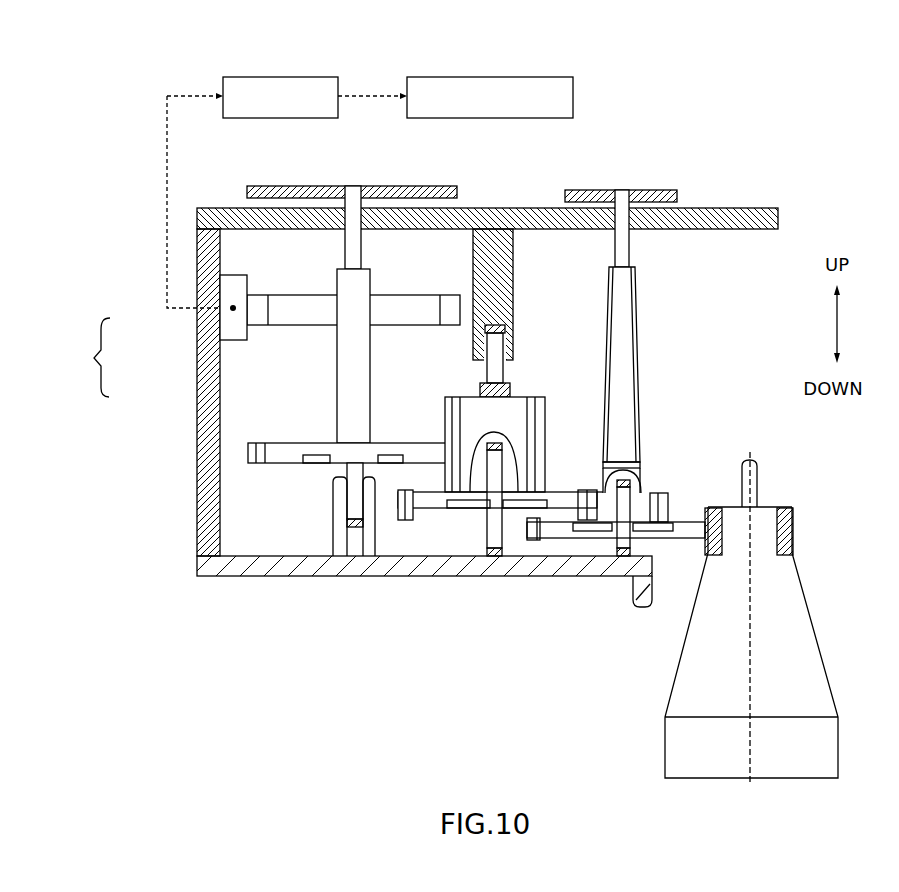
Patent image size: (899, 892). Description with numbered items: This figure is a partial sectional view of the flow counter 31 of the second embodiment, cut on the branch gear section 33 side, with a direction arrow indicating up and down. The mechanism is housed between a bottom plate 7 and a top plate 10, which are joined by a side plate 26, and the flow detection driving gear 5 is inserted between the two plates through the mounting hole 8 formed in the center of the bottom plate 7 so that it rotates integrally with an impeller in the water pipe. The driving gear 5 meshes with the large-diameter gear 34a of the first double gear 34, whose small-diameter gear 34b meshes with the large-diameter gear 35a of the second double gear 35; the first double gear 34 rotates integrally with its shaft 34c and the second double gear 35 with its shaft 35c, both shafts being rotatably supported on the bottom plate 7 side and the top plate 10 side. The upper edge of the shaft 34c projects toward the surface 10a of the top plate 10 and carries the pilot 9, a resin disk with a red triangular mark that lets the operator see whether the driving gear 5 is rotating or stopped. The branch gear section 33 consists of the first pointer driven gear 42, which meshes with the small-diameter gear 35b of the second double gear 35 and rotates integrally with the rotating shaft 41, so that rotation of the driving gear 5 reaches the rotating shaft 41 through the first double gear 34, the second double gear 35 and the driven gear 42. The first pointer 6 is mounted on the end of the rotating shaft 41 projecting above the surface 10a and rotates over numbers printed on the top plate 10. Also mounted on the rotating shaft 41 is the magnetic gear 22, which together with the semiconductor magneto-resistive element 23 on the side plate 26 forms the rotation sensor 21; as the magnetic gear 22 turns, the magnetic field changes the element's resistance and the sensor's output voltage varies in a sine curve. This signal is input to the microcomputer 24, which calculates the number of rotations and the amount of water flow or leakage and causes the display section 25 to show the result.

The flow detection driving gear 5 is at (788, 506).
The first pointer 6 is at (275, 185).
The bottom plate 7 is at (283, 578).
The mounting hole 8 is at (656, 586).
The pilot 9 is at (652, 190).
The top plate 10 is at (487, 402).
The surface of top plate 10a is at (771, 207).
The rotation sensor 21 is at (260, 336).
The magnetic gear 22 is at (293, 318).
The semiconductor magneto-resistive element 23 is at (232, 330).
The microcomputer 24 is at (273, 77).
The display section 25 is at (478, 77).
The side plate 26 is at (197, 471).
The flow counter 31 is at (716, 188).
The branch gear section 33 is at (143, 583).
The first double gear 34 is at (660, 421).
The large-diameter gear 34a is at (699, 521).
The small-diameter gear 34b is at (667, 491).
The shaft 34c is at (628, 246).
The second double gear 35 is at (490, 484).
The large-diameter gear 35a is at (403, 512).
The small-diameter gear 35b is at (540, 396).
The shaft 35c is at (481, 372).
The rotating shaft 41 is at (362, 252).
The first pointer driven gear 42 is at (285, 465).